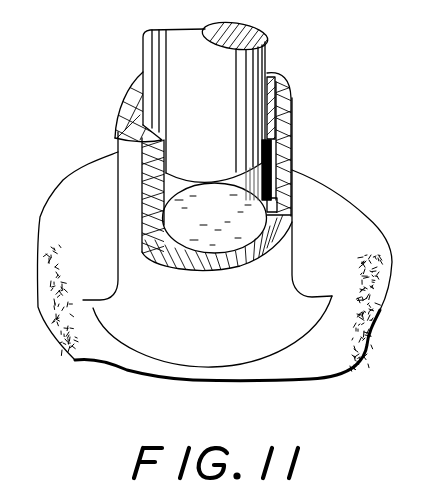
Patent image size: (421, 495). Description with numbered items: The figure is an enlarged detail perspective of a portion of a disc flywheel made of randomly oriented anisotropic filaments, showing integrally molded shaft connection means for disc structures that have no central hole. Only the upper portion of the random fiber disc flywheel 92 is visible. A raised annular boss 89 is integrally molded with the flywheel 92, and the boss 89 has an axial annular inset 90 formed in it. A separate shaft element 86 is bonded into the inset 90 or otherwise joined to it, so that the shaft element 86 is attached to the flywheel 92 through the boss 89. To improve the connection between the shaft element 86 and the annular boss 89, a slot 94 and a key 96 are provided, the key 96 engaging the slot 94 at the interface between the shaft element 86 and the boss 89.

The shaft element 86 is at (215, 68).
The raised annular boss 89 is at (131, 201).
The axial annular inset 90 is at (163, 232).
The random fiber disc flywheel 92 is at (355, 255).
The slot 94 is at (270, 163).
The key 96 is at (272, 88).